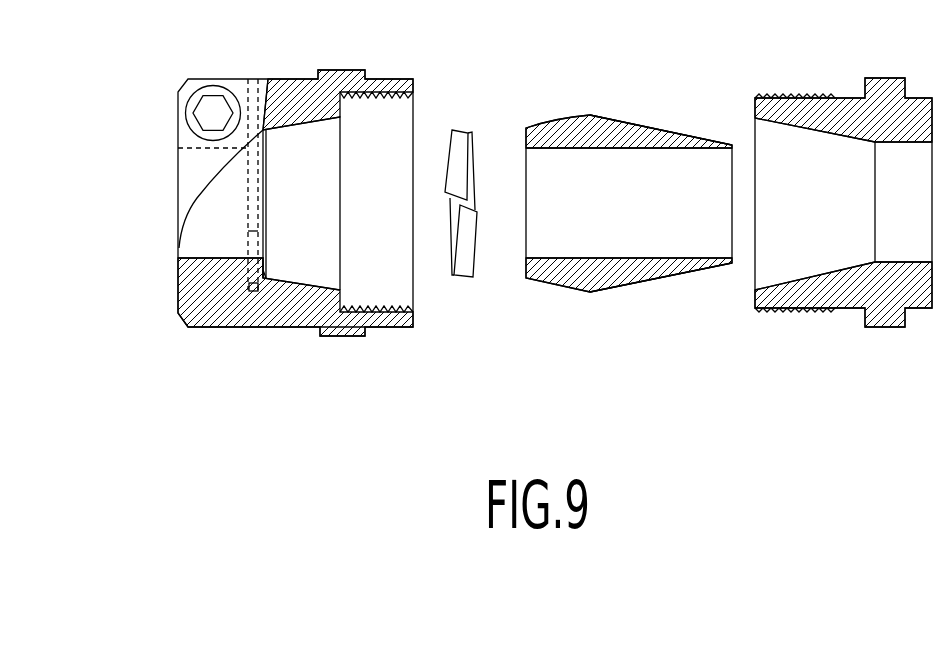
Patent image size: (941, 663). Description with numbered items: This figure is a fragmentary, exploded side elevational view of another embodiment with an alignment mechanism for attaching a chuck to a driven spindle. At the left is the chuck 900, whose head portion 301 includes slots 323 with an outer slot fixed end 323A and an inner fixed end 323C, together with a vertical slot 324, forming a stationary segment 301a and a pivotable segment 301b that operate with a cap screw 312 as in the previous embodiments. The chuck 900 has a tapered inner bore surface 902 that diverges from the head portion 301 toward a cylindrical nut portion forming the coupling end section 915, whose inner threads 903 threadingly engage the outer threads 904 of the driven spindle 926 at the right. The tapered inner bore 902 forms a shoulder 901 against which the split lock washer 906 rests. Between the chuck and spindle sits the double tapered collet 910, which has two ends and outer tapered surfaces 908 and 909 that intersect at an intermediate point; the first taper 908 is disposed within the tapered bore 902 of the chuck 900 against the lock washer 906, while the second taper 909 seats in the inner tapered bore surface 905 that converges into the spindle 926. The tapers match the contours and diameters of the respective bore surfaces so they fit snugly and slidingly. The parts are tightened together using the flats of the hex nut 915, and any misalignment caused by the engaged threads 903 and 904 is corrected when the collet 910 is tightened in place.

The chuck 900 is at (285, 227).
The head portion 301 is at (177, 288).
The stationary segment 301a is at (197, 173).
The pivotable segment 301b is at (228, 243).
The cap screw 312 is at (188, 98).
The vertical slot 324 is at (238, 75).
The slots 323 is at (252, 193).
The outer slot fixed end 323A is at (268, 278).
The inner fixed end 323C is at (267, 225).
The shoulder 901 is at (267, 275).
The tapered inner bore surface 902 is at (288, 127).
The inner threads 903 is at (407, 307).
The coupling end section 915 is at (340, 340).
The split lock washer 906 is at (457, 220).
The outer tapered surface 908 is at (560, 282).
The outer tapered surface 909 is at (661, 217).
The collet 910 is at (621, 308).
The driven spindle 926 is at (898, 330).
The inner tapered bore surface 905 is at (818, 277).
The outer threads 904 is at (802, 310).